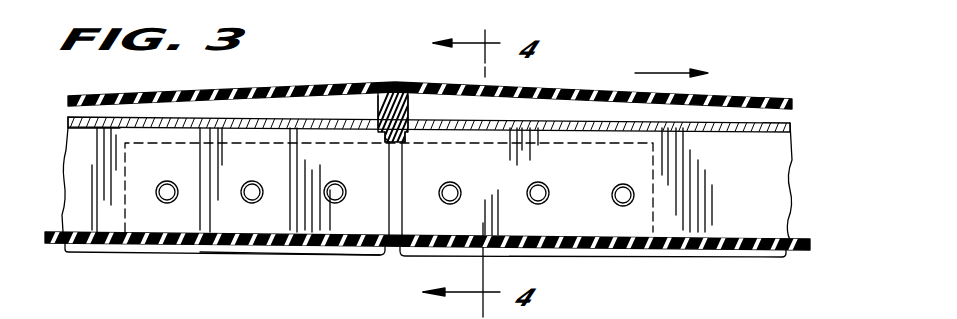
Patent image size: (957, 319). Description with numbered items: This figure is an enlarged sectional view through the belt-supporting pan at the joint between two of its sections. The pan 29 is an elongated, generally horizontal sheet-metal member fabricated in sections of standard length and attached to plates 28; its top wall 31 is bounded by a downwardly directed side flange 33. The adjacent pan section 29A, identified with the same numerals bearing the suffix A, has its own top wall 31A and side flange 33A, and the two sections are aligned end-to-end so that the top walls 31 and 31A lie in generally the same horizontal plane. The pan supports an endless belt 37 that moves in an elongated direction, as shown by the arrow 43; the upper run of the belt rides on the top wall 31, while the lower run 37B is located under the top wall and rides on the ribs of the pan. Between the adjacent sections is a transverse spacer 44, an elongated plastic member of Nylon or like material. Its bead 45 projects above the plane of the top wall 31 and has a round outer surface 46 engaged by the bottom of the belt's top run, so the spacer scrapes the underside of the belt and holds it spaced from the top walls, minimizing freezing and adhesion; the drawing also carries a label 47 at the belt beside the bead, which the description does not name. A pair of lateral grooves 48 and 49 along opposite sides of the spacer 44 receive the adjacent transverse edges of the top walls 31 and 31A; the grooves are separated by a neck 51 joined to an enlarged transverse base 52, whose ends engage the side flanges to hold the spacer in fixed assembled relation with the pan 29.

The plates 28 is at (393, 223).
The pan 29 is at (795, 180).
The adjacent pan section 29A is at (110, 218).
The top wall 31 is at (733, 133).
The top wall of adjacent pan section 31A is at (100, 127).
The side flange 33 is at (717, 222).
The side flange of adjacent pan section 33A is at (227, 217).
The endless belt 37 is at (316, 86).
The lower run of the belt 37B is at (793, 238).
The arrow 43 is at (672, 57).
The transverse spacer 44 is at (397, 75).
The bead 45 is at (378, 107).
The round outer surface 46 is at (380, 86).
The fastener upper right edge 47 is at (436, 88).
The lateral groove 48 is at (379, 142).
The lateral groove 49 is at (410, 109).
The neck 51 is at (384, 142).
The base 52 is at (401, 145).